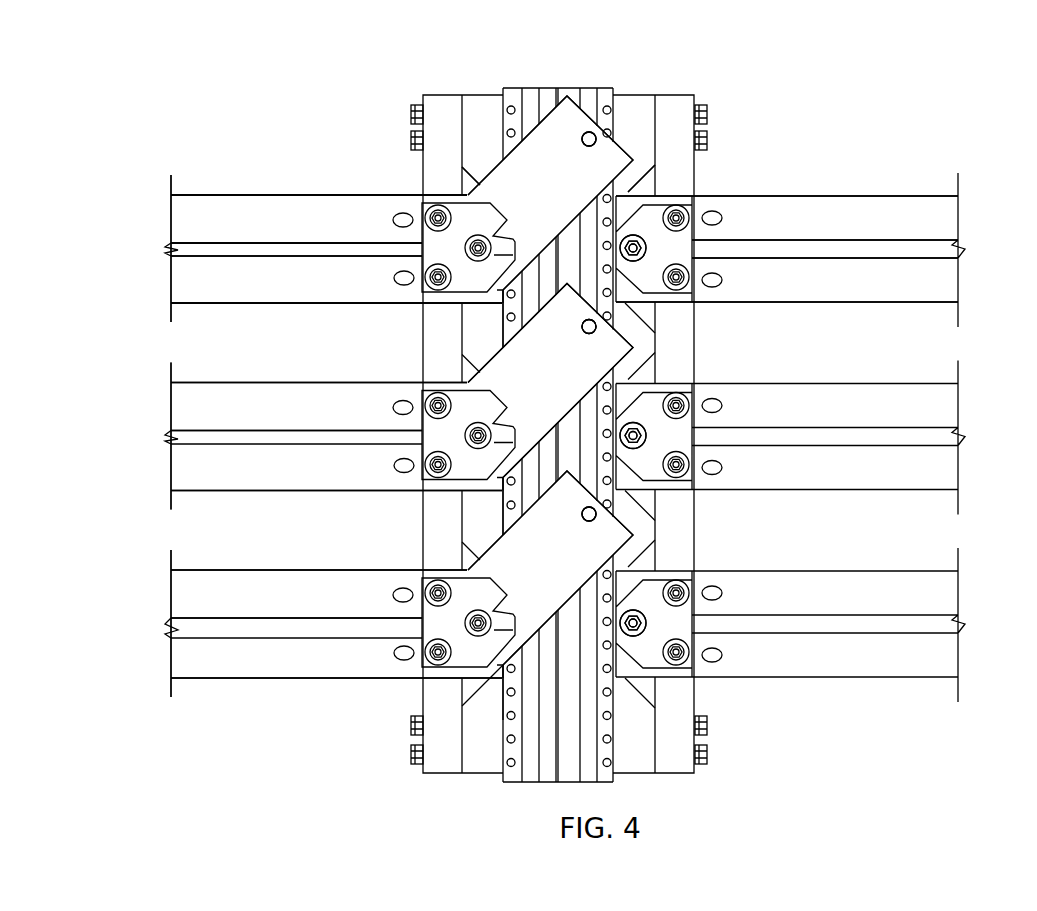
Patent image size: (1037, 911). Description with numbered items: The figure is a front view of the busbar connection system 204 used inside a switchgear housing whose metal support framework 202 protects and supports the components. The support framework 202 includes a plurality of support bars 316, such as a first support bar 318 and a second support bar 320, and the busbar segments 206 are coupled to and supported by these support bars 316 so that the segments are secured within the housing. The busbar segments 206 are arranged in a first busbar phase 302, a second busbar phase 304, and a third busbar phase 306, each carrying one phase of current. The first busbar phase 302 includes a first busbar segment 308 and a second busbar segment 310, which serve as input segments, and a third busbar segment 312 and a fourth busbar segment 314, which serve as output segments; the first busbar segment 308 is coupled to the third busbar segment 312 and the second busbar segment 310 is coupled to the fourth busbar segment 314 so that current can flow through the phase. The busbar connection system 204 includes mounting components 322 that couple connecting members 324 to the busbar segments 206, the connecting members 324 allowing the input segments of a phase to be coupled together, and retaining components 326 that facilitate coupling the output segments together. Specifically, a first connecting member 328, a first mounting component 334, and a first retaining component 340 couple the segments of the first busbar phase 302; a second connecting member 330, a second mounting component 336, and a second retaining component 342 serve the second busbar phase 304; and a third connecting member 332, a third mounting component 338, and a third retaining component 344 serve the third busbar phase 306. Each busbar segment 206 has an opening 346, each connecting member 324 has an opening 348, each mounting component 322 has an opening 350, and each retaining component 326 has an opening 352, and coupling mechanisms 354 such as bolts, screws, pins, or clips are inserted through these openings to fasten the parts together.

The support framework 202 is at (533, 88).
The busbar connection system 204 is at (318, 118).
The busbar segments 206 is at (171, 218).
The first busbar phase 302 is at (85, 254).
The second busbar phase 304 is at (85, 441).
The third busbar phase 306 is at (85, 629).
The first busbar segment 308 is at (221, 195).
The second busbar segment 310 is at (240, 304).
The third busbar segment 312 is at (913, 196).
The fourth busbar segment 314 is at (920, 303).
The support bars 316 is at (748, 105).
The first support bar 318 is at (433, 95).
The second support bar 320 is at (683, 95).
The mounting components 322 is at (477, 296).
The connecting members 324 is at (575, 104).
The retaining components 326 is at (694, 302).
The first connecting member 328 is at (598, 118).
The second connecting member 330 is at (605, 375).
The third connecting member 332 is at (605, 562).
The first mounting component 334 is at (422, 296).
The second mounting component 336 is at (422, 483).
The third mounting component 338 is at (422, 670).
The first retaining component 340 is at (648, 242).
The second retaining component 342 is at (648, 428).
The third retaining component 344 is at (648, 616).
The opening 346 is at (395, 215).
The opening 348 is at (596, 132).
The opening 350 is at (425, 235).
The opening 352 is at (690, 236).
The coupling mechanism 354 is at (425, 228).